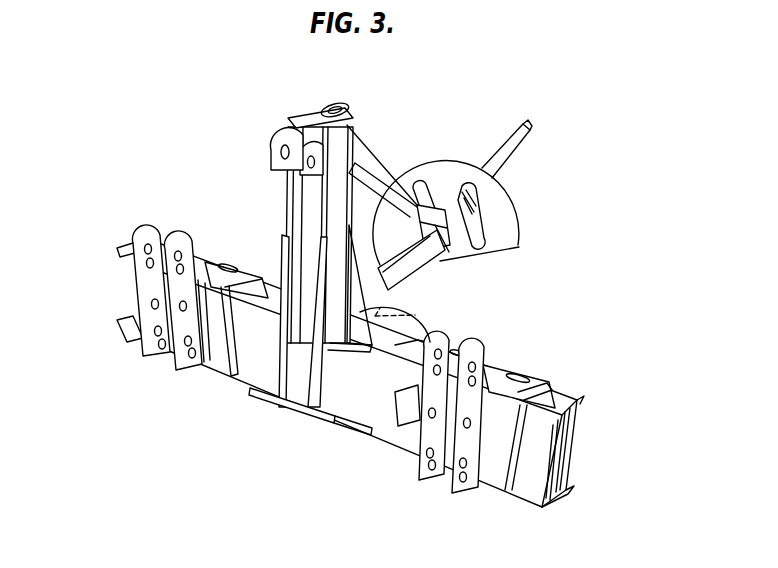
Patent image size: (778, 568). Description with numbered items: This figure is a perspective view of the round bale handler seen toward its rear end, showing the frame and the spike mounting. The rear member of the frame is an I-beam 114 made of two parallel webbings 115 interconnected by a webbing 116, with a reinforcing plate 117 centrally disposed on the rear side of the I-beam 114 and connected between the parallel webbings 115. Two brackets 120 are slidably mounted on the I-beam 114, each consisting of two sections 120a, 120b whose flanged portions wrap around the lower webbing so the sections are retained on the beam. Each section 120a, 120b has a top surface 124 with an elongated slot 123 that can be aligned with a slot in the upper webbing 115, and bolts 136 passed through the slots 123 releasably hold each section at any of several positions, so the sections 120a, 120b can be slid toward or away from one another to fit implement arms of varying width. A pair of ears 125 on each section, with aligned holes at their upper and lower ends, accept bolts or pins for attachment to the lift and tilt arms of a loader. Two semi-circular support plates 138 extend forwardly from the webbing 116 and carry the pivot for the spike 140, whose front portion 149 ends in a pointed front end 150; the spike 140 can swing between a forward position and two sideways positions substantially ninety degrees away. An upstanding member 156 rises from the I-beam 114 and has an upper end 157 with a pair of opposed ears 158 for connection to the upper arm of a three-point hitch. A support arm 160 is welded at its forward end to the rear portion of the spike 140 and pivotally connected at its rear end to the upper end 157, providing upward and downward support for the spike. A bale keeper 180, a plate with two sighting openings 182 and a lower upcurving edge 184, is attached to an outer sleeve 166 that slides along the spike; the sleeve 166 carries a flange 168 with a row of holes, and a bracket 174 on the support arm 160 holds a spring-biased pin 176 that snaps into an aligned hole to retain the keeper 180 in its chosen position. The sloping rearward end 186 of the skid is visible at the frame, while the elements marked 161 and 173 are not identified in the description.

The I-beam 114 is at (576, 440).
The parallel webbings 115 is at (582, 410).
The webbing 116 is at (566, 452).
The reinforcing plate 117 is at (365, 428).
The bracket 120 is at (331, 350).
The section 120a is at (485, 517).
The section 120b is at (208, 355).
The elongated slot 123 is at (237, 270).
The top surface 124 is at (237, 303).
The ears 125 is at (130, 323).
The bolts 136 is at (227, 263).
The semi-circular support plates 138 is at (418, 316).
The spike 140 is at (518, 148).
The front portion 149 is at (512, 162).
The pointed front end 150 is at (528, 122).
The upstanding member 156 is at (307, 200).
The upper end 157 is at (298, 118).
The ears 158 is at (270, 152).
The support arm 160 is at (373, 162).
The eye 161 is at (346, 116).
The outer sleeve 166 is at (440, 250).
The flange 168 is at (393, 302).
The tube 173 is at (400, 283).
The bracket 174 is at (440, 213).
The pin 176 is at (480, 220).
The bale keeper 180 is at (494, 198).
The sighting openings 182 is at (417, 187).
The lower upcurving edge 184 is at (478, 260).
The sloping rearward end 186 is at (293, 415).